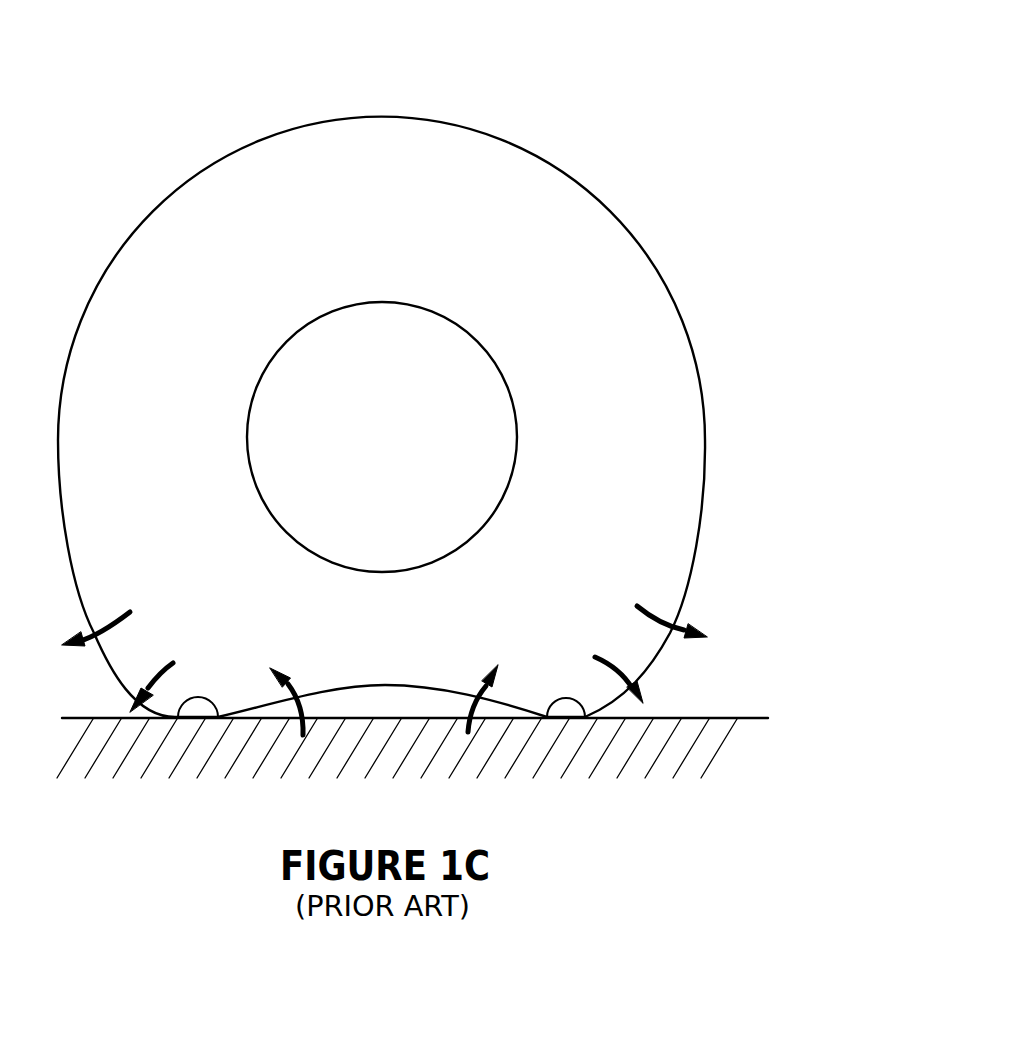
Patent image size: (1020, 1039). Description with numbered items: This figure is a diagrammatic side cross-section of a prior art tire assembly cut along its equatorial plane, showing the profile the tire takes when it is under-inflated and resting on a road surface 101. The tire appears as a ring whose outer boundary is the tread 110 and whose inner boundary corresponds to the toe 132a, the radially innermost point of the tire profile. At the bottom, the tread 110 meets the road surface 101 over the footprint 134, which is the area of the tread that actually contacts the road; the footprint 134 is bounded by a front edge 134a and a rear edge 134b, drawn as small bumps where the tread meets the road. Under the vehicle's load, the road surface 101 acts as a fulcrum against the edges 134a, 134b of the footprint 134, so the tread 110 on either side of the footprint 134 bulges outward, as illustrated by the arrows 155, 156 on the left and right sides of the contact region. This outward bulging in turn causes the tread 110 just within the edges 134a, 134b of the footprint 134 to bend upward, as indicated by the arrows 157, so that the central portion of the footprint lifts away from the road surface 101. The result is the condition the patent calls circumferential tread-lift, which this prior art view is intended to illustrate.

The tread 110 is at (478, 131).
The toe 132a is at (477, 337).
The footprint 134 is at (452, 689).
The front edge of footprint 134a is at (582, 713).
The rear edge of footprint 134b is at (175, 716).
The road surface 101 is at (743, 717).
The arrow indicating outward bulging of tread 155 is at (128, 612).
The arrow indicating outward bulging of tread 156 is at (165, 664).
The arrow indicating upward bending of tread 157 is at (297, 690).